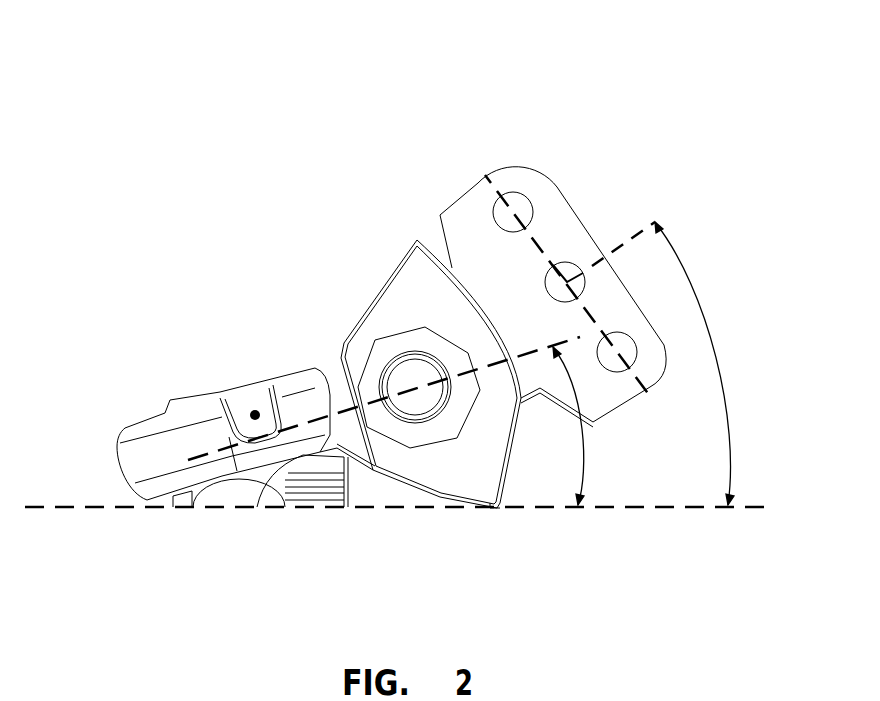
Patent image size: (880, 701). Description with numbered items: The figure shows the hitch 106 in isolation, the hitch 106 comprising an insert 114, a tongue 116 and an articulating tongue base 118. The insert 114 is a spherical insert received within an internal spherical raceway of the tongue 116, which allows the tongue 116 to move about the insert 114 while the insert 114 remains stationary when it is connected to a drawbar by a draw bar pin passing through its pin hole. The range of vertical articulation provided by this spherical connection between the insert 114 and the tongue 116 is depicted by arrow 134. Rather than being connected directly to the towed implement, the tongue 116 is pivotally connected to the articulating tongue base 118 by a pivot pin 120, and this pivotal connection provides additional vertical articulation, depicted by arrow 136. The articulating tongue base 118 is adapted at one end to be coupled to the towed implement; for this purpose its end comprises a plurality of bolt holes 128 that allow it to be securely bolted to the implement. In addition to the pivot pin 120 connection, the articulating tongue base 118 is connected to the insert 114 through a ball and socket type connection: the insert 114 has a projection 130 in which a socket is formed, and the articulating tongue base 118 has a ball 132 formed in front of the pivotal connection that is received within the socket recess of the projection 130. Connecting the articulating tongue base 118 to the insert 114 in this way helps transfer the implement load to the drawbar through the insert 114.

The hitch 106 is at (425, 34).
The insert 114 is at (223, 483).
The tongue 116 is at (133, 472).
The articulating tongue base 118 is at (516, 178).
The pivot pin 120 is at (413, 373).
The bolt holes 128 is at (520, 207).
The projection 130 is at (317, 485).
The ball 132 is at (352, 472).
The arrow 134 is at (589, 426).
The arrow 136 is at (682, 363).